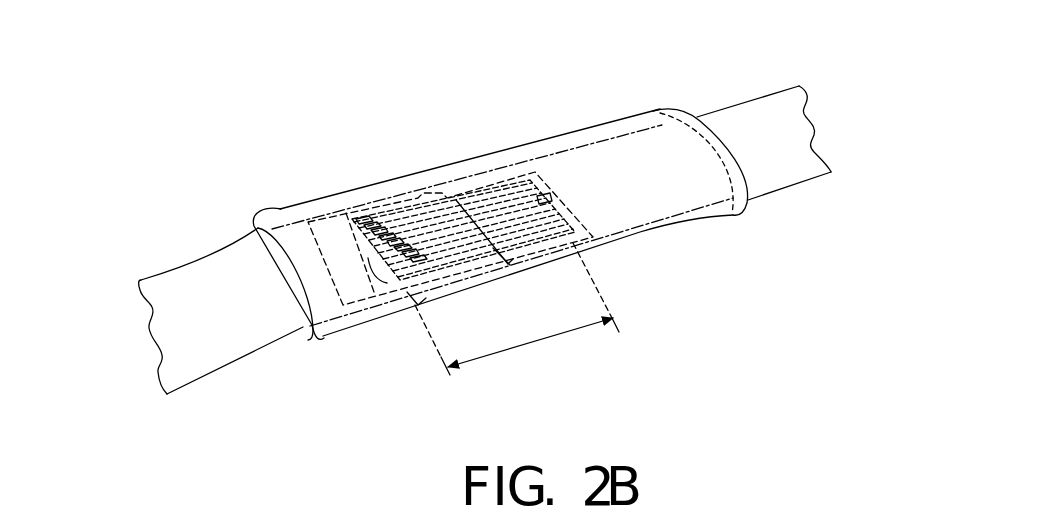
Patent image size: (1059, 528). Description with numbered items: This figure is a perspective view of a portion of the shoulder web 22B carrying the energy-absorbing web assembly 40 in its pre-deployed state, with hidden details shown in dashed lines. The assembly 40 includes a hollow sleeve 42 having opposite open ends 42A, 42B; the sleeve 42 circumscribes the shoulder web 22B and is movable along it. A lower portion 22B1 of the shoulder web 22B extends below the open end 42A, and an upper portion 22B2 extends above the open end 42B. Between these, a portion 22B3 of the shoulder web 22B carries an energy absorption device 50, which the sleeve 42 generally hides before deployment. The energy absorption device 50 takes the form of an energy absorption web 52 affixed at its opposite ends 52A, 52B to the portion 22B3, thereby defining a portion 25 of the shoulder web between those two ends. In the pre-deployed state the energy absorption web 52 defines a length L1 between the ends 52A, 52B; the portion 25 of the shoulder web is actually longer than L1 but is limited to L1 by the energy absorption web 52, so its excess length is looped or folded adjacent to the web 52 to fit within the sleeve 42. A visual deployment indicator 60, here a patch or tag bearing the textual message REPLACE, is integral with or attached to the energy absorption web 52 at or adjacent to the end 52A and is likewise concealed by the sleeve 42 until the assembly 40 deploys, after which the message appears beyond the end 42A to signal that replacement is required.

The shoulder web 22B is at (479, 246).
The lower portion of the shoulder web 22B1 is at (210, 375).
The upper portion of the shoulder web 22B2 is at (770, 95).
The portion of the shoulder web 22B3 is at (660, 226).
The energy-absorbing web assembly 40 is at (462, 137).
The hollow sleeve 42 is at (525, 238).
The open end of the sleeve 42A is at (306, 343).
The open end of the sleeve 42B is at (748, 204).
The energy absorption device 50 is at (445, 210).
The energy absorption web 52 is at (483, 197).
The end of the energy absorption web 52A is at (355, 218).
The end of the energy absorption web 52B is at (547, 188).
The visual deployment indicator 60 is at (330, 216).
The portion of the shoulder web 25 is at (457, 288).
The length L1 is at (523, 347).